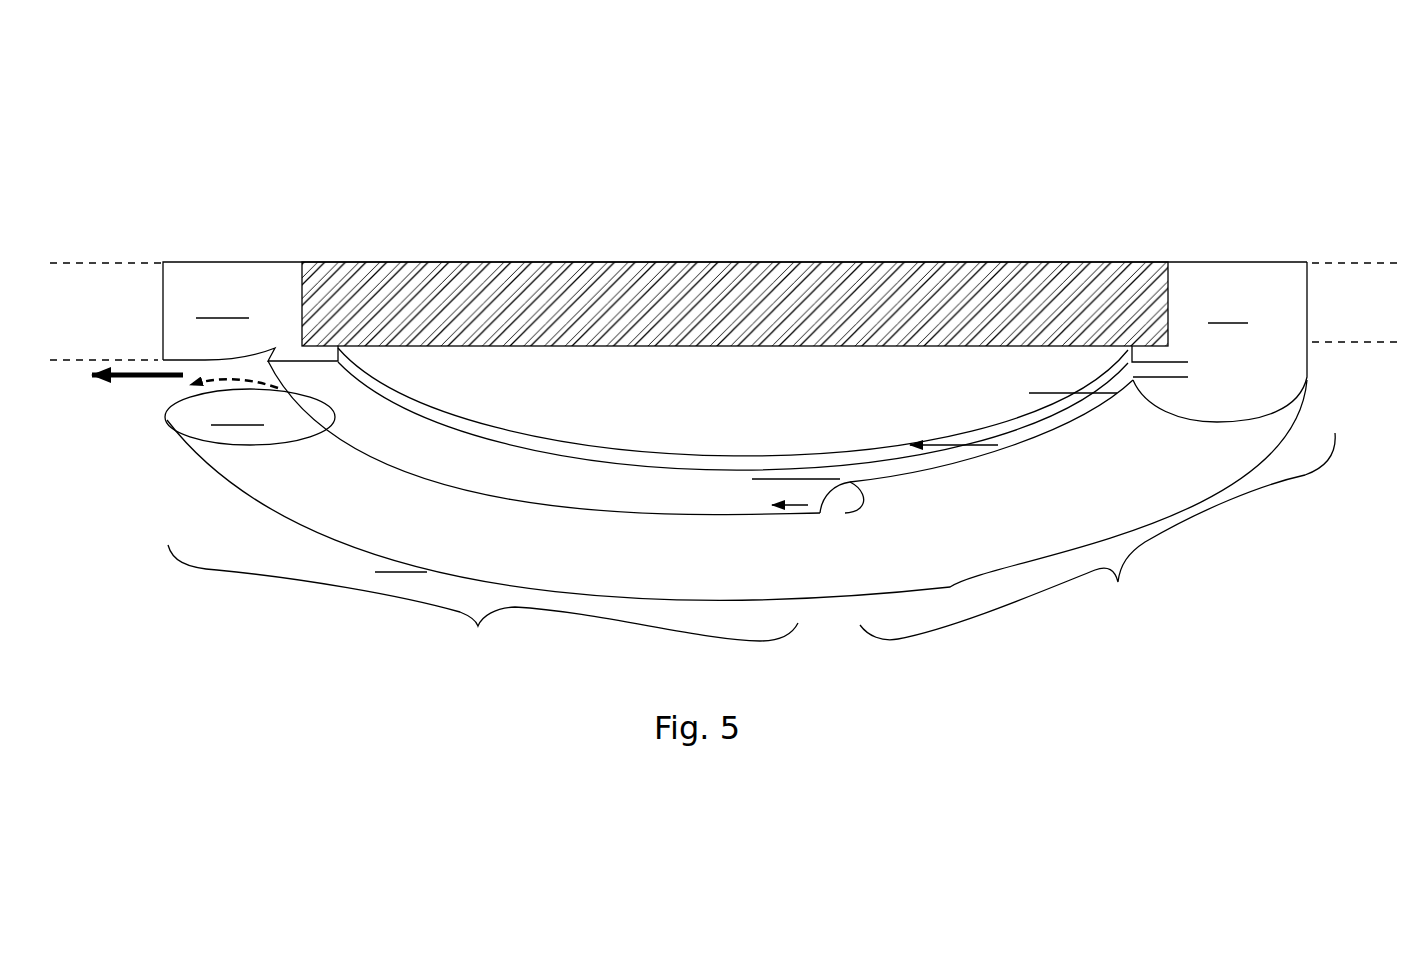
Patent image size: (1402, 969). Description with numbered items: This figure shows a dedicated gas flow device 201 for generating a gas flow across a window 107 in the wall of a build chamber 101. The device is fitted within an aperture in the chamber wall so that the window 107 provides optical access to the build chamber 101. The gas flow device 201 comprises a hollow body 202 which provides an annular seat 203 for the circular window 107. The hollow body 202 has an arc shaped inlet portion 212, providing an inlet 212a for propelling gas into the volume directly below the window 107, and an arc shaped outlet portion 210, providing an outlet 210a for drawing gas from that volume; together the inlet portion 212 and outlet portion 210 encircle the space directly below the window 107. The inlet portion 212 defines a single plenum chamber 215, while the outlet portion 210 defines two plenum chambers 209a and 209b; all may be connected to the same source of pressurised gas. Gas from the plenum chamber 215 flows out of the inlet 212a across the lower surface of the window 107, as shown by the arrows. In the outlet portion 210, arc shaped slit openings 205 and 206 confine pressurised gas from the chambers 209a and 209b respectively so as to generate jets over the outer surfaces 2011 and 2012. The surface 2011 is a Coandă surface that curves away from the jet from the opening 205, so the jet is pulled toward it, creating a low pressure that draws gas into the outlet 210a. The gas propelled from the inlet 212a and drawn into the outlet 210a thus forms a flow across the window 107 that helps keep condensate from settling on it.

The build chamber 101 is at (1362, 290).
The window 107 is at (783, 303).
The gas flow device 201 is at (1275, 617).
The hollow body 202 is at (872, 493).
The annular seat 203 is at (1153, 346).
The opening 205 is at (278, 393).
The opening 206 is at (265, 350).
The plenum chamber 209a is at (250, 417).
The plenum chamber 209b is at (735, 311).
The outlet portion 210 is at (648, 509).
The outlet 210a is at (548, 482).
The inlet portion 212 is at (1097, 539).
The inlet 212a is at (1148, 382).
The plenum chamber 215 is at (1220, 342).
The outer surface 2011 is at (200, 392).
The outer surface 2012 is at (203, 358).